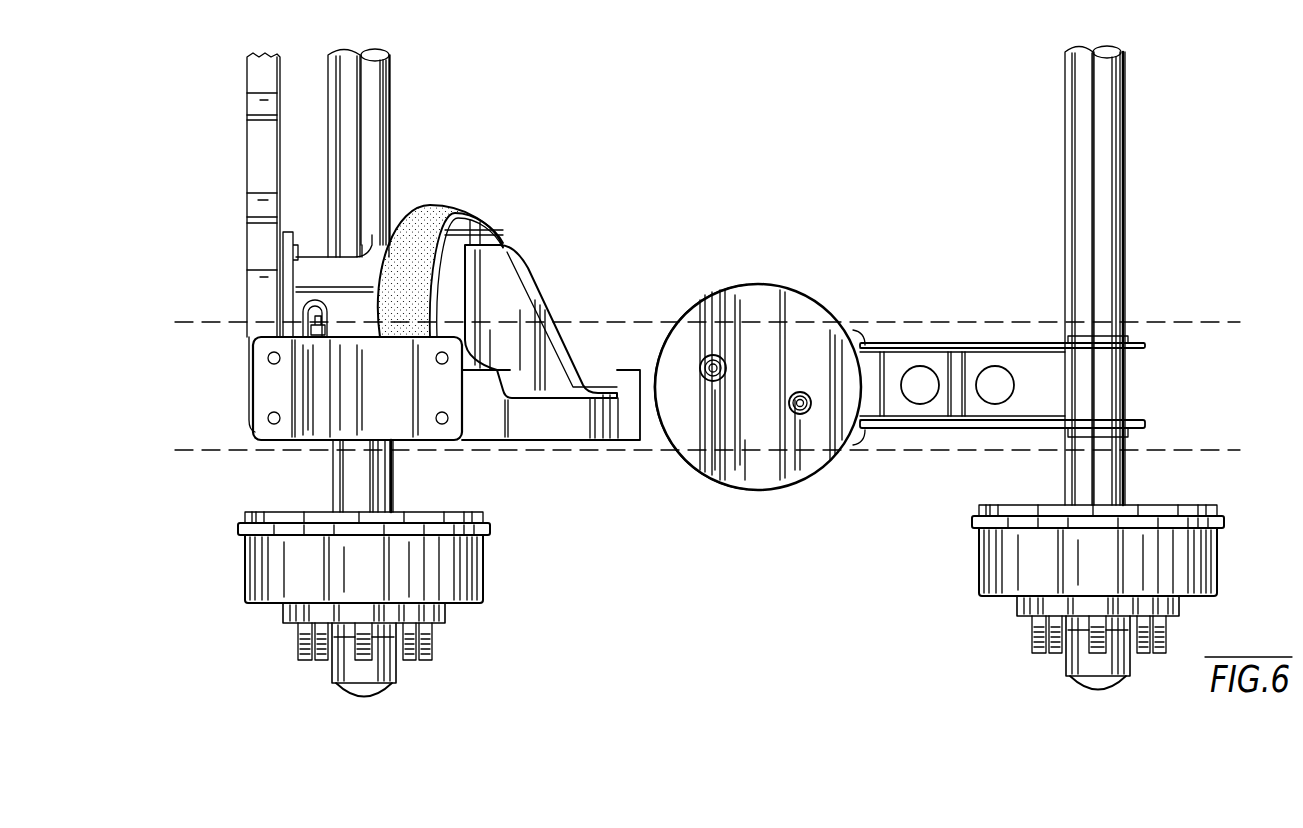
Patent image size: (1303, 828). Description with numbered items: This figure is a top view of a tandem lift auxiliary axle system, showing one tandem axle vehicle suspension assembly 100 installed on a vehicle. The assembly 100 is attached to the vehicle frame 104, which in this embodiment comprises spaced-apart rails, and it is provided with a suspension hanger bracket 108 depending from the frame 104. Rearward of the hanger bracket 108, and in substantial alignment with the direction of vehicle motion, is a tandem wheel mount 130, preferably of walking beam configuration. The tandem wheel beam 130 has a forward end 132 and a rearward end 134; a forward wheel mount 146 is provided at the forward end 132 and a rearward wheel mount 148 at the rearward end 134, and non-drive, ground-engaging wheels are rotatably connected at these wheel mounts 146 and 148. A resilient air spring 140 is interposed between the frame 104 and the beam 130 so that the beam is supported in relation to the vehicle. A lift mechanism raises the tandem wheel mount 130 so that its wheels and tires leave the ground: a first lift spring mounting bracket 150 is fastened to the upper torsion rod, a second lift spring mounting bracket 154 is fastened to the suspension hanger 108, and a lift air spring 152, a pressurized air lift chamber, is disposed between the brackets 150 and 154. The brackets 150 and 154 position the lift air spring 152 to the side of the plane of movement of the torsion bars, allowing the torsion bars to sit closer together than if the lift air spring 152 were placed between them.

The tandem axle vehicle suspension assembly 100 is at (848, 140).
The vehicle frame 104 is at (1153, 318).
The suspension hanger bracket 108 is at (270, 352).
The tandem wheel mount 130 is at (890, 360).
The forward end 132 is at (478, 440).
The rearward end 134 is at (1052, 336).
The resilient air spring 140 is at (670, 318).
The forward wheel mount 146 is at (453, 577).
The rearward wheel mount 148 is at (1040, 563).
The first lift spring mounting bracket 150 is at (547, 300).
The lift air spring 152 is at (450, 208).
The second lift spring mounting bracket 154 is at (315, 288).